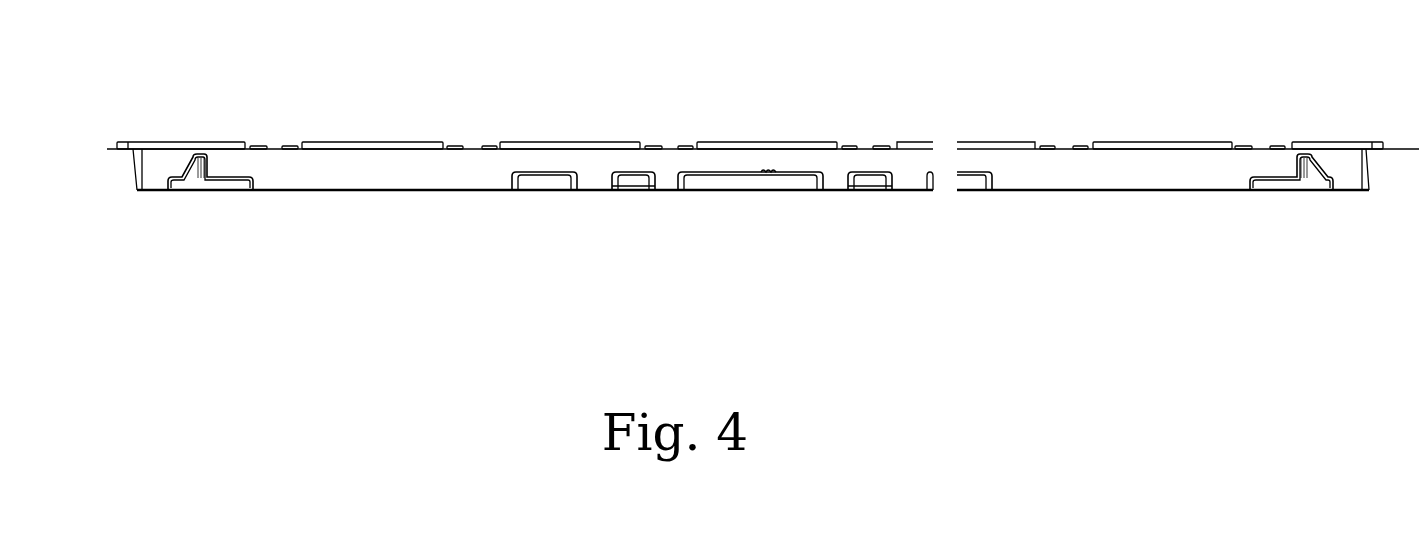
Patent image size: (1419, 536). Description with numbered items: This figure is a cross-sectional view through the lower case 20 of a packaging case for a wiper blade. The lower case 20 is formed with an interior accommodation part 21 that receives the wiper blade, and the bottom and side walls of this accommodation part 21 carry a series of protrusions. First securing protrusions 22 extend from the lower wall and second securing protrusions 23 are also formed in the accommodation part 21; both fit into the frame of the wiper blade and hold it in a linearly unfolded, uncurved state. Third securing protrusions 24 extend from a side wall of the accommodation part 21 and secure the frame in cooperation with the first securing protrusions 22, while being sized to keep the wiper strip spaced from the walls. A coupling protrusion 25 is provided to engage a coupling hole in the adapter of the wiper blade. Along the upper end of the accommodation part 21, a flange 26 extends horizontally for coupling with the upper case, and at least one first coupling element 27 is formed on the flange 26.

The lower case 20 is at (921, 115).
The accommodation part 21 is at (429, 191).
The first securing protrusion 22 is at (626, 174).
The second securing protrusion 23 is at (197, 154).
The third securing protrusion 24 is at (543, 171).
The coupling protrusion 25 is at (767, 169).
The flange 26 is at (468, 147).
The first coupling element 27 is at (373, 143).